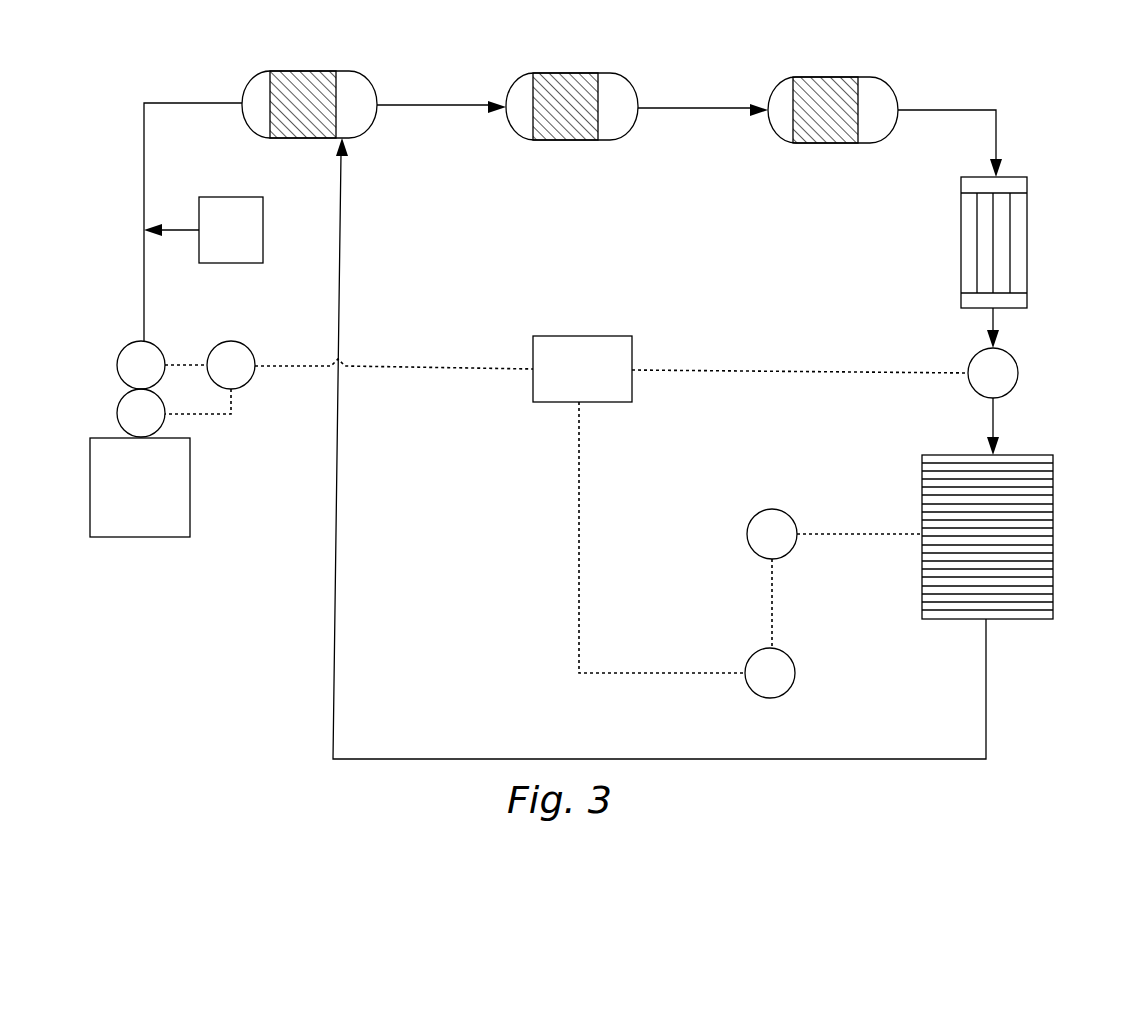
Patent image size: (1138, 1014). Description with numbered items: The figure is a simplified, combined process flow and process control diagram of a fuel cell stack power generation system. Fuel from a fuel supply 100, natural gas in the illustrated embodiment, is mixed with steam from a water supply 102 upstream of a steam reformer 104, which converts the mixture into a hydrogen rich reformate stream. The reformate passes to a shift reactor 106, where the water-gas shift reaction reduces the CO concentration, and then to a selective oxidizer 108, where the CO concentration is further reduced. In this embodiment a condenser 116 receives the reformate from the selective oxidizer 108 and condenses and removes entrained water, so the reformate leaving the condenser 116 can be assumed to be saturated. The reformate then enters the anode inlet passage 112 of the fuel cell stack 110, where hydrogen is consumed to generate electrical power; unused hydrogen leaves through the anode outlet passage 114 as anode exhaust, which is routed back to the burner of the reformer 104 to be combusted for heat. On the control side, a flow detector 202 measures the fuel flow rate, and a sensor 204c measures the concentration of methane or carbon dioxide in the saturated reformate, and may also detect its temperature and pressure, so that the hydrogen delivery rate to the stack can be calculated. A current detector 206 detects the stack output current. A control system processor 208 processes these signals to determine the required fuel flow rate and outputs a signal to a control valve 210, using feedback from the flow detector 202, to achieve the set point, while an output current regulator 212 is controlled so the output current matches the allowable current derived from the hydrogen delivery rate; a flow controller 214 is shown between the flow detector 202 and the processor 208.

The fuel supply 100 is at (140, 487).
The water supply 102 is at (203, 230).
The steam reformer 104 is at (297, 72).
The shift reactor 106 is at (561, 73).
The selective oxidizer 108 is at (819, 77).
The fuel cell stack 110 is at (1053, 471).
The anode inlet passage 112 is at (986, 450).
The anode outlet passage 114 is at (986, 622).
The condenser 116 is at (1027, 211).
The flow detector 202 is at (121, 354).
The sensor 204c is at (1018, 367).
The current detector 206 is at (786, 515).
The control system processor 208 is at (582, 369).
The control valve 210 is at (121, 403).
The output current regulator 212 is at (785, 652).
The flow controller 214 is at (253, 349).